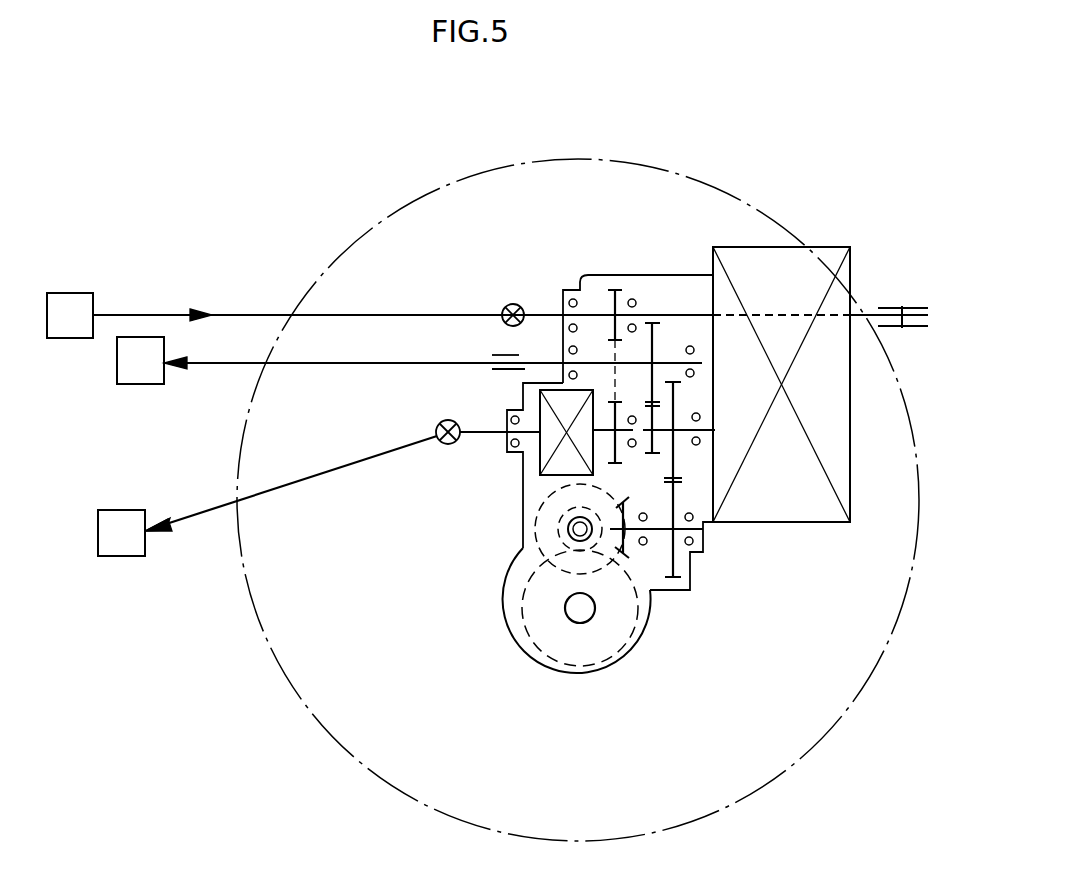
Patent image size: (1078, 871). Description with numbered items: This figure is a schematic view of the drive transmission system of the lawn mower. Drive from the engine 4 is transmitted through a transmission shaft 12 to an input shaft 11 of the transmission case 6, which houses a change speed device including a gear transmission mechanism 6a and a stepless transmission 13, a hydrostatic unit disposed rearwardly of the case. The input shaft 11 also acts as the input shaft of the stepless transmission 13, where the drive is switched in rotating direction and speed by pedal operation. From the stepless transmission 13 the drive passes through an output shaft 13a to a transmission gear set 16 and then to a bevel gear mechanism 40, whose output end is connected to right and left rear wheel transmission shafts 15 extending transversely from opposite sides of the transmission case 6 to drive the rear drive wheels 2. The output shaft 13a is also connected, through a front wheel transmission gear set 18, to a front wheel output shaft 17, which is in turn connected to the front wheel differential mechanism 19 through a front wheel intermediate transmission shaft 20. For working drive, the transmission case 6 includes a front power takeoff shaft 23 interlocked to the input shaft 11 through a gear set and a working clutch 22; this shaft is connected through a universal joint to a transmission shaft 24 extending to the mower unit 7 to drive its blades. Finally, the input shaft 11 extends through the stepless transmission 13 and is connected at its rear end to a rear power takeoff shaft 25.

The rear drive wheels 2 is at (693, 177).
The engine 4 is at (70, 315).
The transmission case 6 is at (580, 684).
The gear transmission mechanism 6a is at (598, 298).
The mower unit 7 is at (121, 533).
The input shaft 11 is at (547, 312).
The transmission shaft 12 is at (247, 312).
The stepless transmission 13 is at (790, 524).
The output shaft 13a is at (681, 427).
The rear wheel transmission shafts 15 is at (566, 608).
The transmission gear set 16 is at (692, 477).
The front wheel output shaft 17 is at (547, 360).
The front wheel transmission gear set 18 is at (657, 343).
The front wheel differential mechanism 19 is at (140, 360).
The front wheel intermediate transmission shaft 20 is at (325, 366).
The working clutch 22 is at (538, 463).
The front power takeoff shaft 23 is at (488, 432).
The transmission shaft 24 is at (298, 483).
The rear power takeoff shaft 25 is at (918, 307).
The bevel gear mechanism 40 is at (637, 558).